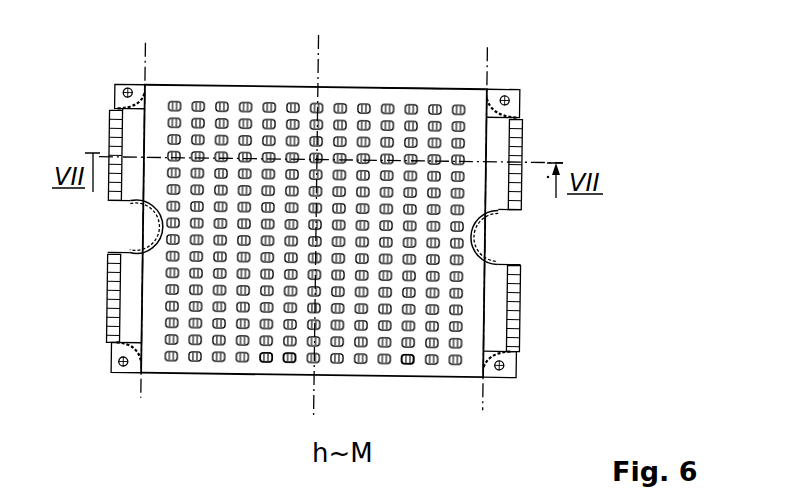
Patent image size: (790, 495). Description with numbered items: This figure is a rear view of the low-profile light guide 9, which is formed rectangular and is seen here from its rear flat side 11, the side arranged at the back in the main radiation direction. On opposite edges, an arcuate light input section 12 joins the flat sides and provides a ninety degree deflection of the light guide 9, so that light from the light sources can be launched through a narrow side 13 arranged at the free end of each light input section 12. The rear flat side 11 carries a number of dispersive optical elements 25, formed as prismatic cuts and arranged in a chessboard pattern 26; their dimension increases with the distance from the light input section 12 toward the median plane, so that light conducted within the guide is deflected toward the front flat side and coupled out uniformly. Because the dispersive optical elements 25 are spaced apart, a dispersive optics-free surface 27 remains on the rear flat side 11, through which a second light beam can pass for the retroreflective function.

The low-profile light guide 9 is at (463, 421).
The rear flat side 11 is at (213, 100).
The light input section 12 is at (493, 151).
The narrow side 13 is at (520, 310).
The dispersive optical elements 25 is at (290, 363).
The chessboard pattern 26 is at (411, 92).
The dispersive optics-free surface 27 is at (420, 363).